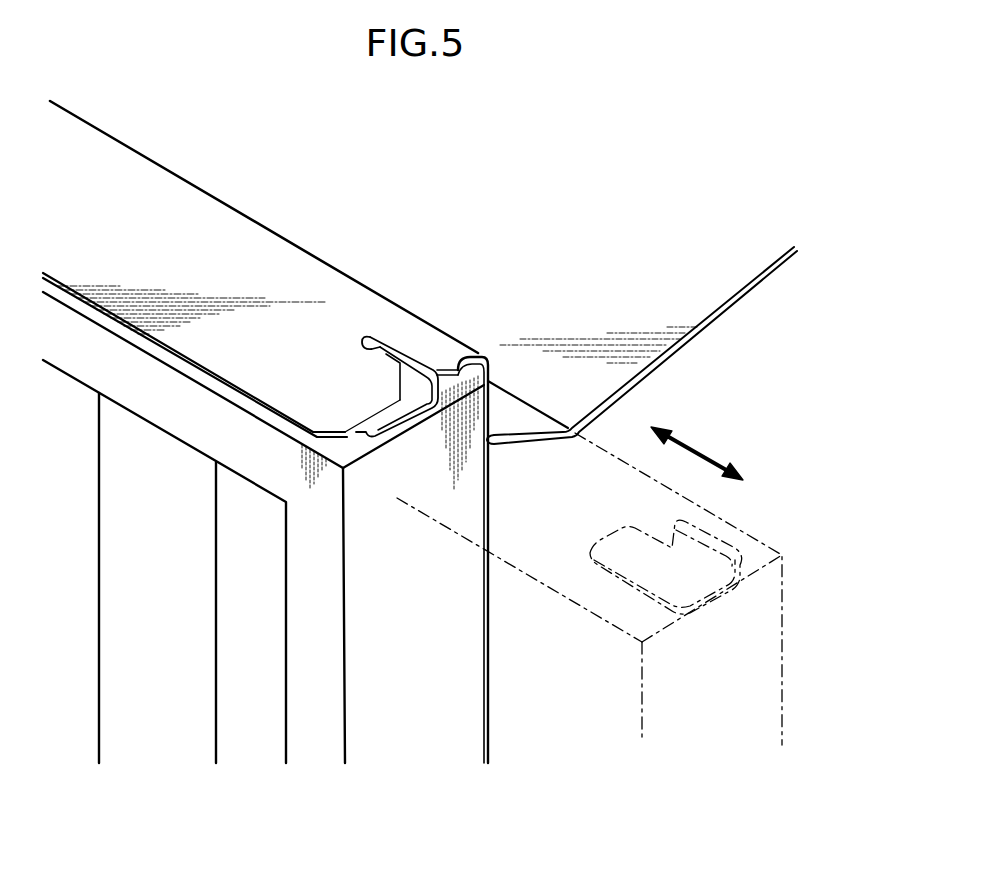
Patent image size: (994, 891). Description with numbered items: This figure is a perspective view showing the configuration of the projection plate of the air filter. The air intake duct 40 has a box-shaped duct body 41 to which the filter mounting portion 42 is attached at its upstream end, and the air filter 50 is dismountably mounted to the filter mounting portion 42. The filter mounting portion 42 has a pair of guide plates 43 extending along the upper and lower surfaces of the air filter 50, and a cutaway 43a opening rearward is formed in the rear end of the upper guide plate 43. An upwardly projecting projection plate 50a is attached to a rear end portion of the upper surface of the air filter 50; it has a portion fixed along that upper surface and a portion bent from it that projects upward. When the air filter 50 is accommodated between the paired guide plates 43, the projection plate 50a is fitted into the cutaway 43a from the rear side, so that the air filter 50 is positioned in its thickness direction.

The air intake duct 40 is at (759, 186).
The duct body 41 is at (693, 310).
The filter mounting portion 42 is at (172, 223).
The guide plate 43 is at (250, 243).
The cutaway 43a is at (378, 350).
The air filter 50 is at (476, 682).
The projection plate 50a is at (408, 352).